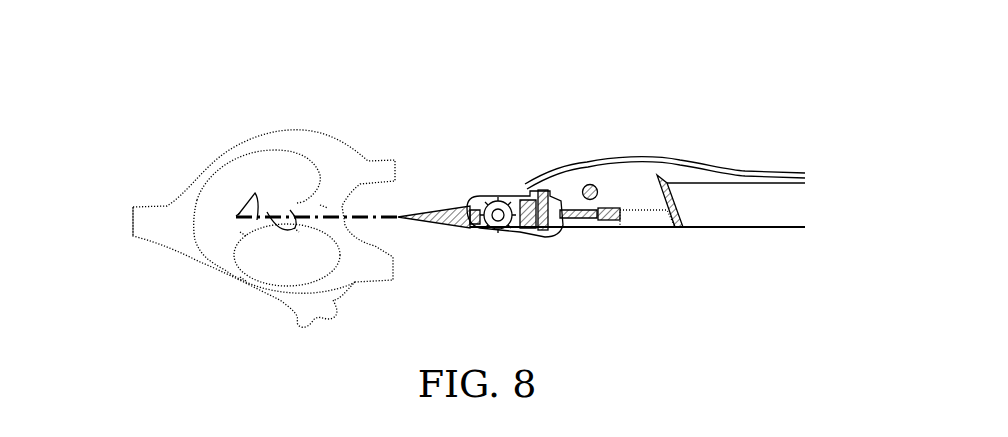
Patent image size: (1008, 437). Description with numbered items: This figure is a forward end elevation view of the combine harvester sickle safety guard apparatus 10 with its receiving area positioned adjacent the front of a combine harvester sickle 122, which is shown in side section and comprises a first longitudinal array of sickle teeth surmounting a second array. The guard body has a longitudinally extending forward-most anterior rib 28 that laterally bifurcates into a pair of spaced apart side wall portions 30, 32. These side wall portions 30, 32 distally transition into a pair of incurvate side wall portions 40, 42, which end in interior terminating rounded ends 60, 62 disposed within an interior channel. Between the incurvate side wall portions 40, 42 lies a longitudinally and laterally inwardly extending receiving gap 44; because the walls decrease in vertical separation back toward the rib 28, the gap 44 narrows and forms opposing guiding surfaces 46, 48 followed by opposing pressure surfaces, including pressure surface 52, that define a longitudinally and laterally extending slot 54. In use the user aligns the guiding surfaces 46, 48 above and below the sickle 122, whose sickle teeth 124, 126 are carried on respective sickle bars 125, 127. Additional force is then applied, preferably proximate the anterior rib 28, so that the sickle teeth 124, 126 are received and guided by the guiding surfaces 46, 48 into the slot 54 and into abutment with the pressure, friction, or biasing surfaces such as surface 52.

The combine harvester sickle safety guard apparatus 10 is at (150, 135).
The anterior rib 28 is at (133, 228).
The side wall portion 30 is at (275, 141).
The side wall portion 32 is at (296, 230).
The incurvate side wall portion 40 is at (297, 203).
The incurvate side wall portion 42 is at (242, 279).
The receiving gap 44 is at (375, 201).
The guiding surface 46 is at (324, 207).
The guiding surface 48 is at (334, 220).
The pressure surface 52 is at (238, 215).
The slot 54 is at (295, 228).
The interior terminating end 60 is at (237, 200).
The interior terminating end 62 is at (243, 234).
The sickle 122 is at (429, 240).
The sickle tooth 124 is at (403, 213).
The sickle bar 125 is at (521, 229).
The sickle tooth 126 is at (455, 229).
The sickle bar 127 is at (563, 225).